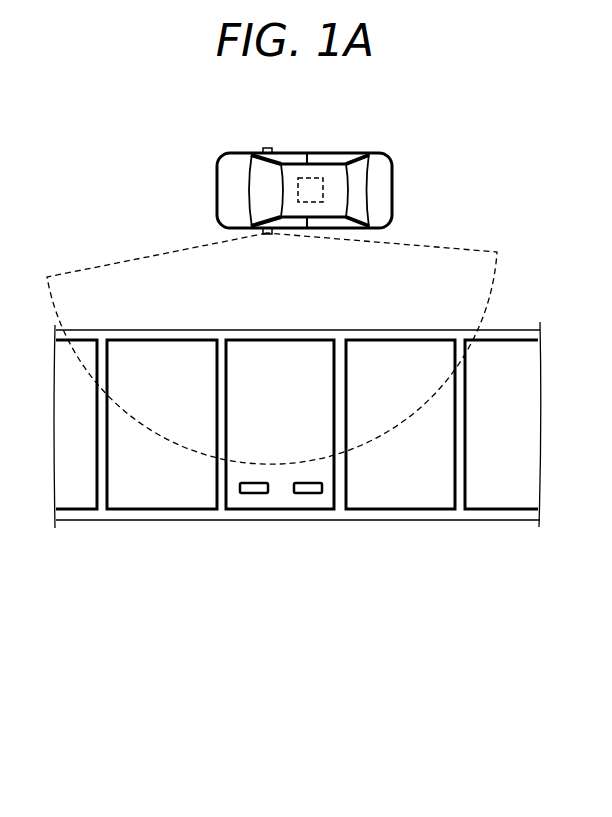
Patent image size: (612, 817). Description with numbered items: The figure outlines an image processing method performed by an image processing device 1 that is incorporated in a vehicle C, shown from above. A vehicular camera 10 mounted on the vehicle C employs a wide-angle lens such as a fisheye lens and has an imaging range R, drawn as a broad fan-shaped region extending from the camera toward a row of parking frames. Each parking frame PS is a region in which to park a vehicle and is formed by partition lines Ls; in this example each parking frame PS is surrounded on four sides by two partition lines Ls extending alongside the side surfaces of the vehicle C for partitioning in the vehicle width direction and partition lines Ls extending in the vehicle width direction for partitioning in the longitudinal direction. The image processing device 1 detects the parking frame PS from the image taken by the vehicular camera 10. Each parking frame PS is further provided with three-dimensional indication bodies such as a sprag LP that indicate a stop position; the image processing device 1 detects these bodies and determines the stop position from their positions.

The image processing device 1 is at (318, 178).
The vehicle C is at (369, 153).
The vehicular camera 10 is at (268, 236).
The imaging range R is at (432, 247).
The parking frame PS is at (247, 365).
The partition lines Ls is at (498, 312).
The sprag LP is at (258, 494).